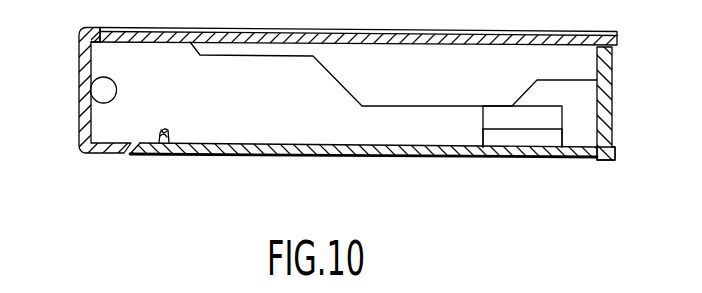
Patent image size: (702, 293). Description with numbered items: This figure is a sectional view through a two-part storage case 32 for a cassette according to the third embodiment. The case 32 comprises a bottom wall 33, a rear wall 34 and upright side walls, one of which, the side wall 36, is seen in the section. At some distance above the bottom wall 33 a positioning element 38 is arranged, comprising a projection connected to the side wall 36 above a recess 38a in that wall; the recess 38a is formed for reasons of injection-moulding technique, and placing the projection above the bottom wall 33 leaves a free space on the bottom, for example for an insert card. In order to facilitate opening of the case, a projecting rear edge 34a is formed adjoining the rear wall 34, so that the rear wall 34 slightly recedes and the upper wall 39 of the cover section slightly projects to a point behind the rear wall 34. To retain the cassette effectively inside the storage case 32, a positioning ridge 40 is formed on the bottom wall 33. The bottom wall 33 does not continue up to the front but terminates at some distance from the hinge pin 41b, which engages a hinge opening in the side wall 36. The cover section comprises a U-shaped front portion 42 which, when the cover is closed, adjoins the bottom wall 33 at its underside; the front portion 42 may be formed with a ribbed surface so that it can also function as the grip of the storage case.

The storage case 32 is at (436, 163).
The bottom wall 33 is at (341, 145).
The rear wall 34 is at (606, 72).
The projecting rear edge 34a is at (615, 154).
The upright side wall 36 is at (278, 120).
The positioning element 38 is at (523, 116).
The recess 38a is at (548, 136).
The upper wall 39 is at (424, 40).
The positioning ridge 40 is at (166, 133).
The hinge pin 41b is at (102, 90).
The U-shaped front portion 42 is at (85, 60).